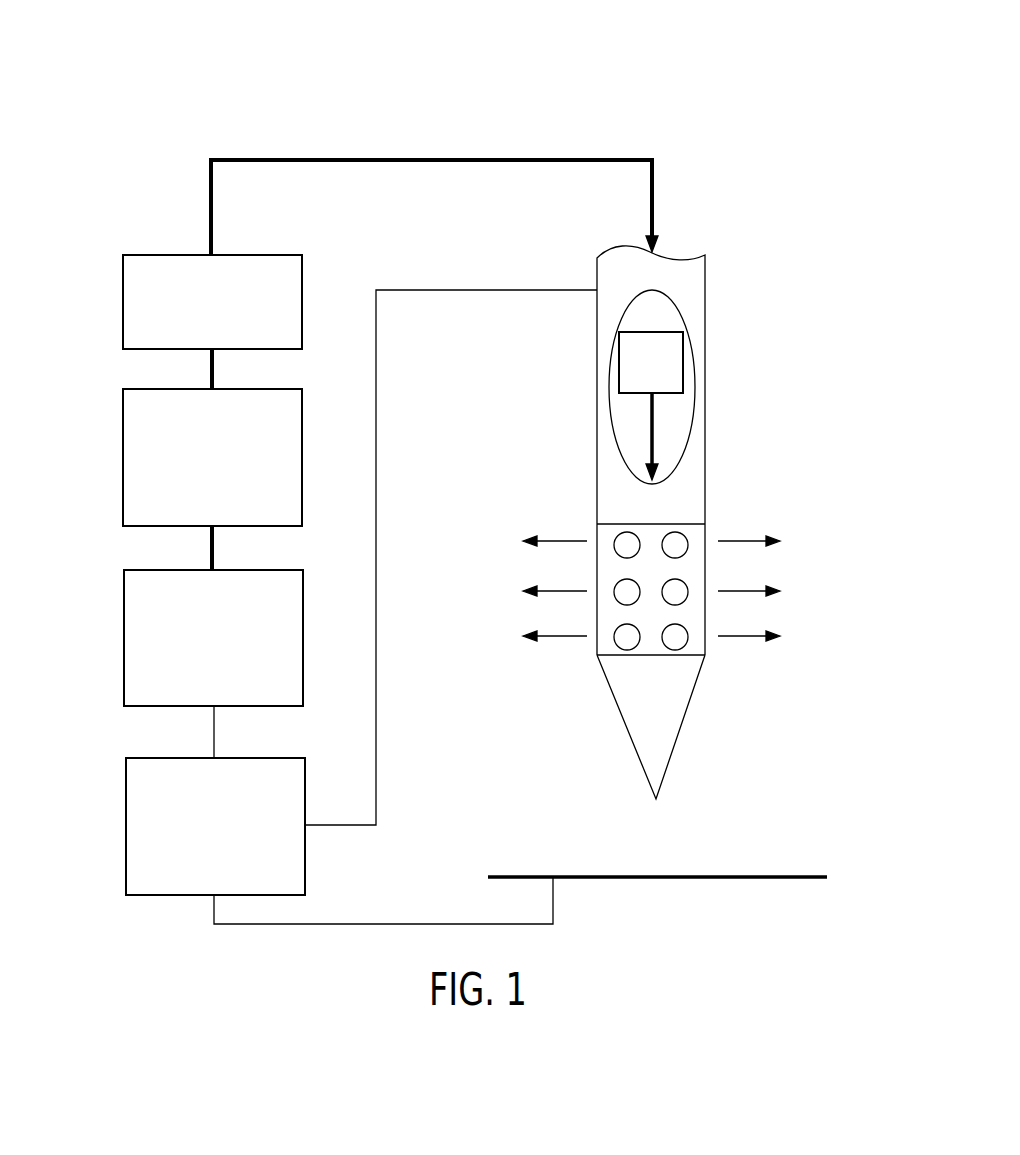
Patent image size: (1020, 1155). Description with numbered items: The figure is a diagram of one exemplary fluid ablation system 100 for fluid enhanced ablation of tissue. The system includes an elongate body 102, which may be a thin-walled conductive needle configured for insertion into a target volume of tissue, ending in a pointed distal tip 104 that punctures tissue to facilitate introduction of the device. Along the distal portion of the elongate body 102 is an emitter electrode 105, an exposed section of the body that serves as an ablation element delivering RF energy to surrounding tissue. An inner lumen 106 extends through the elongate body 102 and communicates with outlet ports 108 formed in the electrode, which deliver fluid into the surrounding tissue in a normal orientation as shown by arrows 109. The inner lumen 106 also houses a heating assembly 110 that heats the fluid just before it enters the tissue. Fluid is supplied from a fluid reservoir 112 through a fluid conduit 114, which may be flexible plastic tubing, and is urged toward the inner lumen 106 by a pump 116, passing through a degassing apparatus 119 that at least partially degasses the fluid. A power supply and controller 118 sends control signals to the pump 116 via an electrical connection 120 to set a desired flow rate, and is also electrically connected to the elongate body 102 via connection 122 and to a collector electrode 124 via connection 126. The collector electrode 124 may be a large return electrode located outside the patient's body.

The fluid ablation system 100 is at (758, 72).
The elongate body 102 is at (765, 405).
The pointed distal tip 104 is at (655, 783).
The emitter electrode 105 is at (695, 647).
The inner lumen 106 is at (660, 311).
The outlet ports 108 is at (676, 534).
The arrows 109 is at (748, 540).
The heating assembly 110 is at (662, 370).
The fluid reservoir 112 is at (124, 635).
The fluid conduit 114 is at (435, 158).
The pump 116 is at (123, 450).
The power supply and controller 118 is at (126, 824).
The degassing apparatus 119 is at (123, 292).
The electrical connection 120 is at (213, 740).
The connection 122 is at (478, 290).
The collector electrode 124 is at (668, 880).
The connection 126 is at (383, 922).